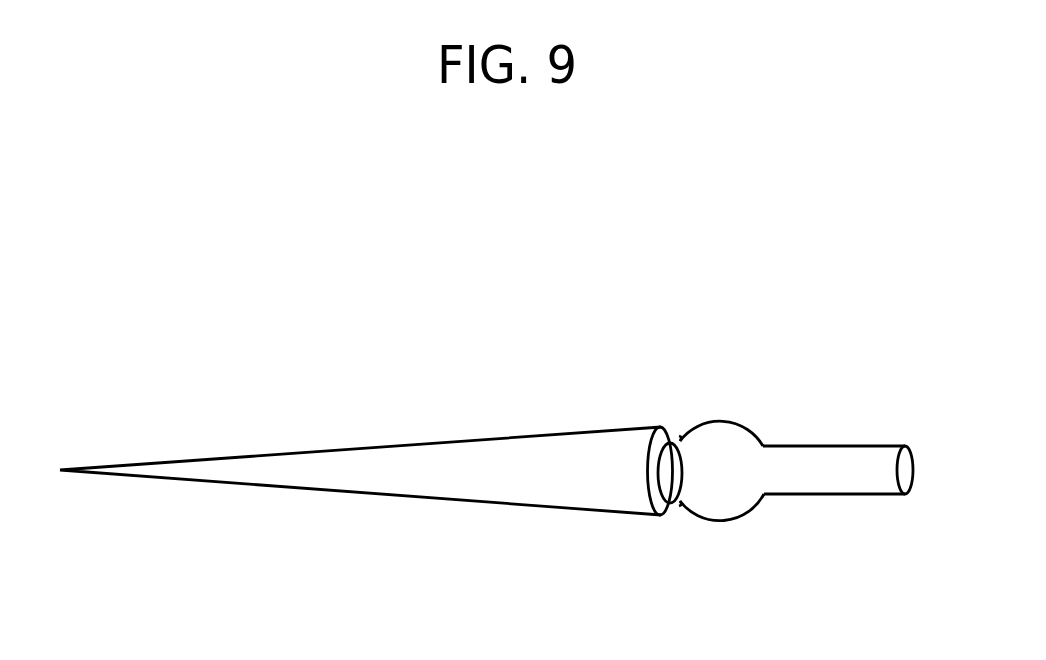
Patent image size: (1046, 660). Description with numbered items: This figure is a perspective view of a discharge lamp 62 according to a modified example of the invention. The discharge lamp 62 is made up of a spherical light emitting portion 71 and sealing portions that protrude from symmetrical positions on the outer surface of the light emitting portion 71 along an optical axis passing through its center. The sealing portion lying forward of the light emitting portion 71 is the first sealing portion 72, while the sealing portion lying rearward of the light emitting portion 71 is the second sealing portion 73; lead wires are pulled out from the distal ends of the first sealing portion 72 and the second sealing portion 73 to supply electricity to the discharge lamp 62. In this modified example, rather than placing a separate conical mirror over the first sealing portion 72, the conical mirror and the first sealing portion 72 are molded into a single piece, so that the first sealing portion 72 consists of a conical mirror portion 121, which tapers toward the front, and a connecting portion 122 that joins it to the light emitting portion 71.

The discharge lamp 62 is at (651, 340).
The first sealing portion 72 is at (569, 447).
The light emitting portion 71 is at (745, 427).
The second sealing portion 73 is at (863, 470).
The conical mirror portion 121 is at (333, 485).
The connecting portion 122 is at (672, 472).